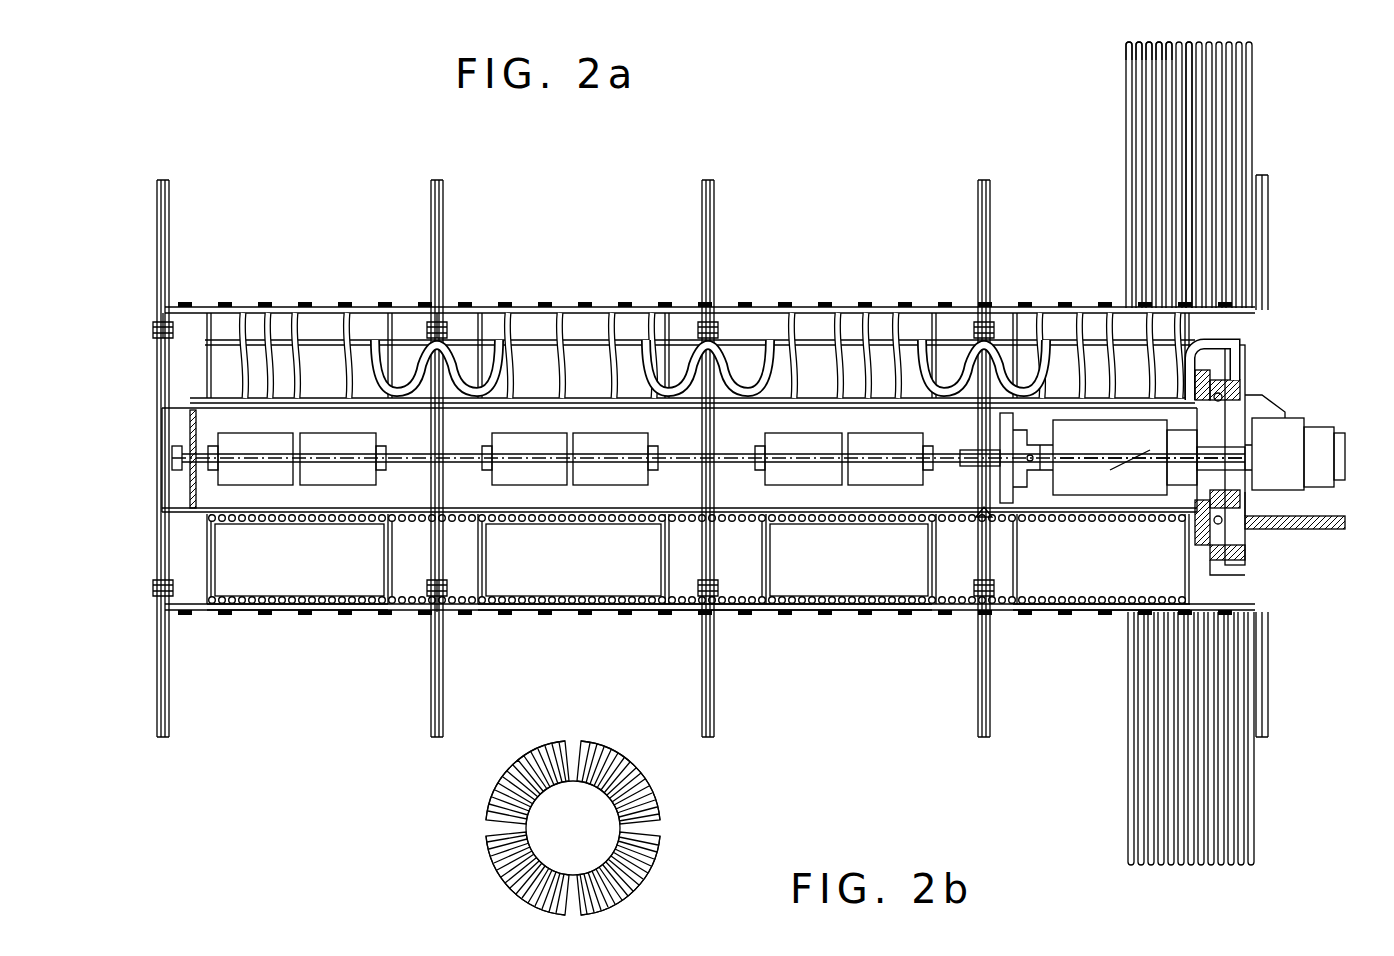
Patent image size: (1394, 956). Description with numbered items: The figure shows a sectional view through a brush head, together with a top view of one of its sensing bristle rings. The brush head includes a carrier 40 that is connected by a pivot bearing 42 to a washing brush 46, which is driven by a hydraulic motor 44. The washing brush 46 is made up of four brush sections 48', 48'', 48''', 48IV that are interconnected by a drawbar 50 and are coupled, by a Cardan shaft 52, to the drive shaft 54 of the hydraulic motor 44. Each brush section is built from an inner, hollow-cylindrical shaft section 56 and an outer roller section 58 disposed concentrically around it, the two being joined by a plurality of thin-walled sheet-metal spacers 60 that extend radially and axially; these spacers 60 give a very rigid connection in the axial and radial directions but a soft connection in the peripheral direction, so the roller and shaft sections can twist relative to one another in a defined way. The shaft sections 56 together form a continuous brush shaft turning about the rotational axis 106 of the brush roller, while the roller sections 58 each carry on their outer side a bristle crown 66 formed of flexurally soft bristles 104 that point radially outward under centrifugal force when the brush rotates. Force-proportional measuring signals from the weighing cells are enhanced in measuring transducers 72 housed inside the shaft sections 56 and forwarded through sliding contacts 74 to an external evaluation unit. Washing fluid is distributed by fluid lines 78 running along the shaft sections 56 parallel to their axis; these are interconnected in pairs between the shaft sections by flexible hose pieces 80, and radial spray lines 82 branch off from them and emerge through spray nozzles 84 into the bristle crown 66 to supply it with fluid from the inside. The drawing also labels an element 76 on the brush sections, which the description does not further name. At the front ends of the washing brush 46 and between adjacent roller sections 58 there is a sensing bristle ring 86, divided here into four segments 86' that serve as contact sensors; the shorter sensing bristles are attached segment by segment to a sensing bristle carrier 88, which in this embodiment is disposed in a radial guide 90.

In FIG. 2A, the carrier 40 is at (1330, 528).
In FIG. 2A, the pivot bearing 42 is at (1243, 540).
In FIG. 2A, the hydraulic motor 44 is at (1282, 445).
In FIG. 2A, the washing brush 46 is at (1255, 117).
In FIG. 2A, the brush section 48' is at (1101, 652).
In FIG. 2A, the brush section 48'' is at (847, 652).
In FIG. 2A, the brush section 48''' is at (577, 652).
In FIG. 2A, the brush section 48IV is at (383, 612).
In FIG. 2A, the drawbar 50 is at (400, 465).
In FIG. 2A, the Cardan shaft 52 is at (1037, 462).
In FIG. 2A, the drive shaft 54 is at (1230, 452).
In FIG. 2A, the shaft section 56 is at (973, 517).
In FIG. 2A, the roller section 58 is at (680, 613).
In FIG. 2A, the spacer 60 is at (280, 610).
In FIG. 2A, the bristle crown 66 is at (1215, 162).
In FIG. 2A, the measuring transducer 72 is at (600, 448).
In FIG. 2A, the sliding contact 74 is at (1090, 420).
In FIG. 2A, the support pad 76 is at (465, 308).
In FIG. 2A, the fluid line 78 is at (296, 308).
In FIG. 2A, the flexible hose piece 80 is at (395, 340).
In FIG. 2A, the radial spray line 82 is at (297, 308).
In FIG. 2A, the spray nozzle 84 is at (246, 308).
In FIG. 2A, the sensing bristle ring 86 is at (755, 434).
In FIG. 2B, the sensing bristle ring 86 is at (646, 828).
In FIG. 2B, the segment 86' is at (585, 828).
In FIG. 2A, the sensing bristle carrier 88 is at (158, 322).
In FIG. 2B, the sensing bristle carrier 88 is at (610, 802).
In FIG. 2A, the radial guide 90 is at (428, 322).
In FIG. 2A, the bristle 104 is at (1150, 62).
In FIG. 2A, the rotational axis 106 is at (1140, 463).